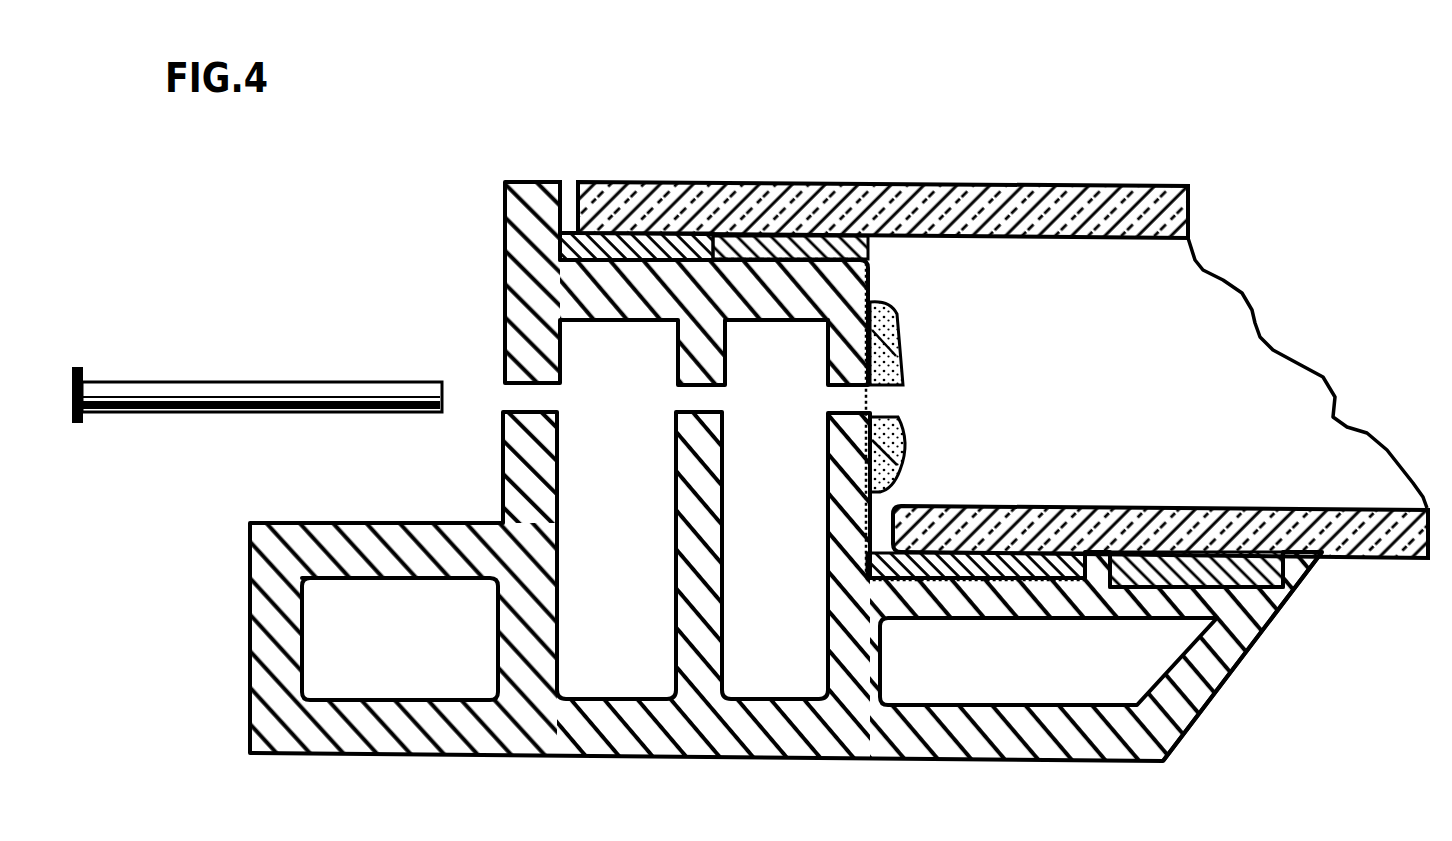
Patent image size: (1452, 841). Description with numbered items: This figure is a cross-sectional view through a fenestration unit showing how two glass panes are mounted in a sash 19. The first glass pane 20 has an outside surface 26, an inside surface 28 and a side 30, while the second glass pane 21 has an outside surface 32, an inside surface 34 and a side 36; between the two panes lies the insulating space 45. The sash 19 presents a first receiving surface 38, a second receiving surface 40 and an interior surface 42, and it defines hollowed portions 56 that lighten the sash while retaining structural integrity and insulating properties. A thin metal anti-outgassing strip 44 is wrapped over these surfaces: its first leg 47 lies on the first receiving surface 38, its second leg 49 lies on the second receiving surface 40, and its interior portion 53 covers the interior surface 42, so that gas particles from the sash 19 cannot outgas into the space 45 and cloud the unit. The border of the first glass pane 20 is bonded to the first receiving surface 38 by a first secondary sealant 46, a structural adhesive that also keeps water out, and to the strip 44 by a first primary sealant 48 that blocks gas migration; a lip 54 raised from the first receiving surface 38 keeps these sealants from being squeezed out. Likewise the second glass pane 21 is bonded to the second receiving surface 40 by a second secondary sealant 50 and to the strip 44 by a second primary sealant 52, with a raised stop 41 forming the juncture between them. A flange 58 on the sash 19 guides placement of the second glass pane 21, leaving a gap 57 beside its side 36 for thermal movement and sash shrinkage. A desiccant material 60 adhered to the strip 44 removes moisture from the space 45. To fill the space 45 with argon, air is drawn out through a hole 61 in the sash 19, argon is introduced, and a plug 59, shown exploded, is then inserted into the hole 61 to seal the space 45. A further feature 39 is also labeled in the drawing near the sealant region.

The sash 19 is at (508, 362).
The first glass pane 20 is at (1070, 530).
The second glass pane 21 is at (968, 190).
The outside surface 26 is at (1375, 560).
The inside surface 28 is at (1330, 508).
The side 30 is at (890, 516).
The outside surface 32 is at (1083, 190).
The inside surface 34 is at (1050, 241).
The side 36 is at (572, 190).
The first receiving surface 38 is at (1097, 552).
The rib 39 is at (1108, 568).
The second receiving surface 40 is at (716, 258).
The stop 41 is at (697, 245).
The interior surface 42 is at (876, 462).
The anti-outgassing strip 44 is at (878, 272).
The space 45 is at (1240, 342).
The first secondary sealant 46 is at (1180, 570).
The first leg 47 is at (965, 578).
The first primary sealant 48 is at (995, 553).
The second leg 49 is at (752, 253).
The second secondary sealant 50 is at (648, 240).
The second primary sealant 52 is at (845, 253).
The interior portion 53 is at (893, 322).
The lip 54 is at (1283, 598).
The hollowed portions 56 is at (384, 645).
The gap 57 is at (559, 213).
The flange 58 is at (528, 182).
The plug 59 is at (215, 392).
The desiccant material 60 is at (901, 346).
The hole 61 is at (515, 397).